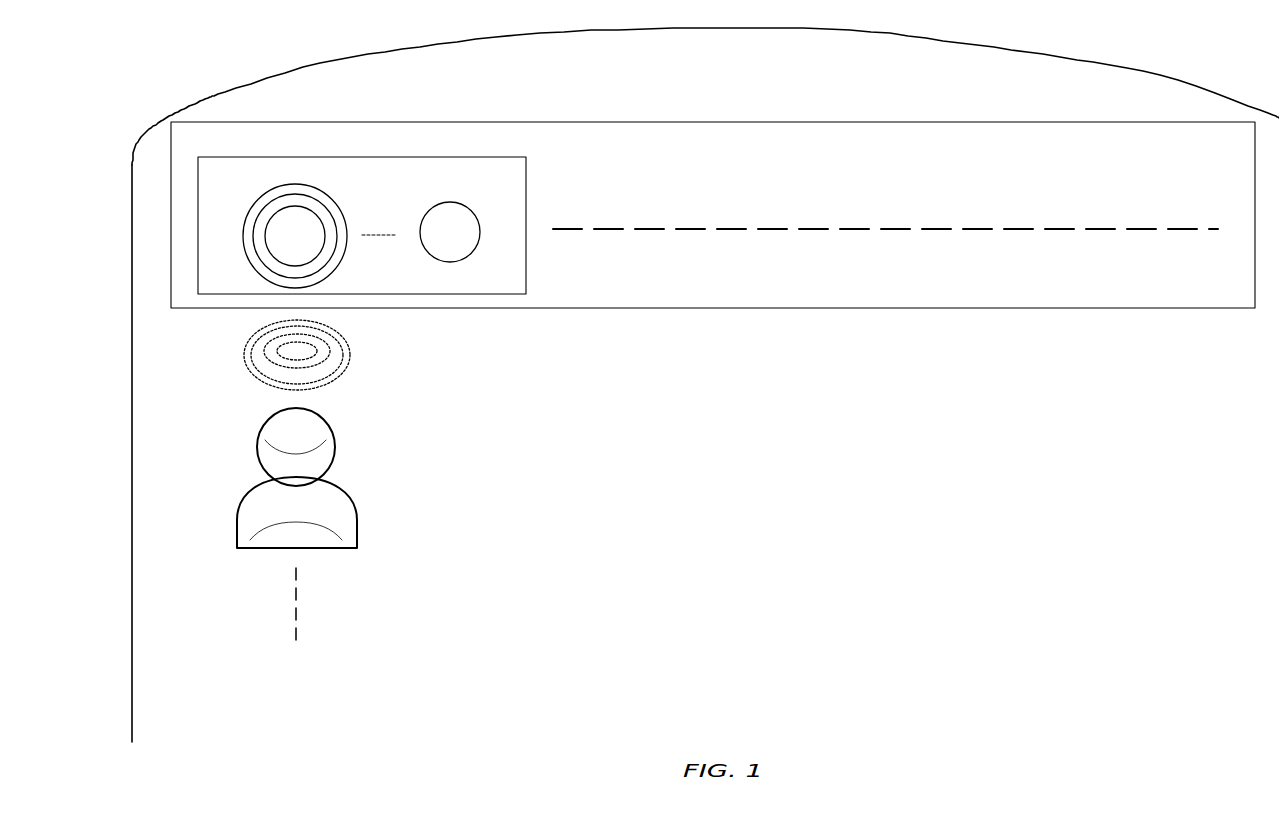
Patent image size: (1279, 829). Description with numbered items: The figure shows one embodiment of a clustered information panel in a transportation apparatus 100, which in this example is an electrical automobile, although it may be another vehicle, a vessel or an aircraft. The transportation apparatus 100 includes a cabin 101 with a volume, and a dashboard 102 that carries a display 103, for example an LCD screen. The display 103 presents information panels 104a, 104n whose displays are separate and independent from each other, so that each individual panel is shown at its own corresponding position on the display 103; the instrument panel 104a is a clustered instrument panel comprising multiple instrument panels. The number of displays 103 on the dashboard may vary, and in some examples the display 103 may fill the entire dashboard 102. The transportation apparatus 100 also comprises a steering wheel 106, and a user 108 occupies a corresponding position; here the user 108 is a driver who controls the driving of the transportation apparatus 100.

The transportation apparatus 100 is at (1193, 82).
The cabin 101 is at (726, 74).
The dashboard 102 is at (797, 122).
The display 103 is at (443, 157).
The clustered instrument panel 104a is at (312, 187).
The information panel 104n is at (452, 200).
The steering wheel 106 is at (350, 343).
The user 108 is at (330, 428).